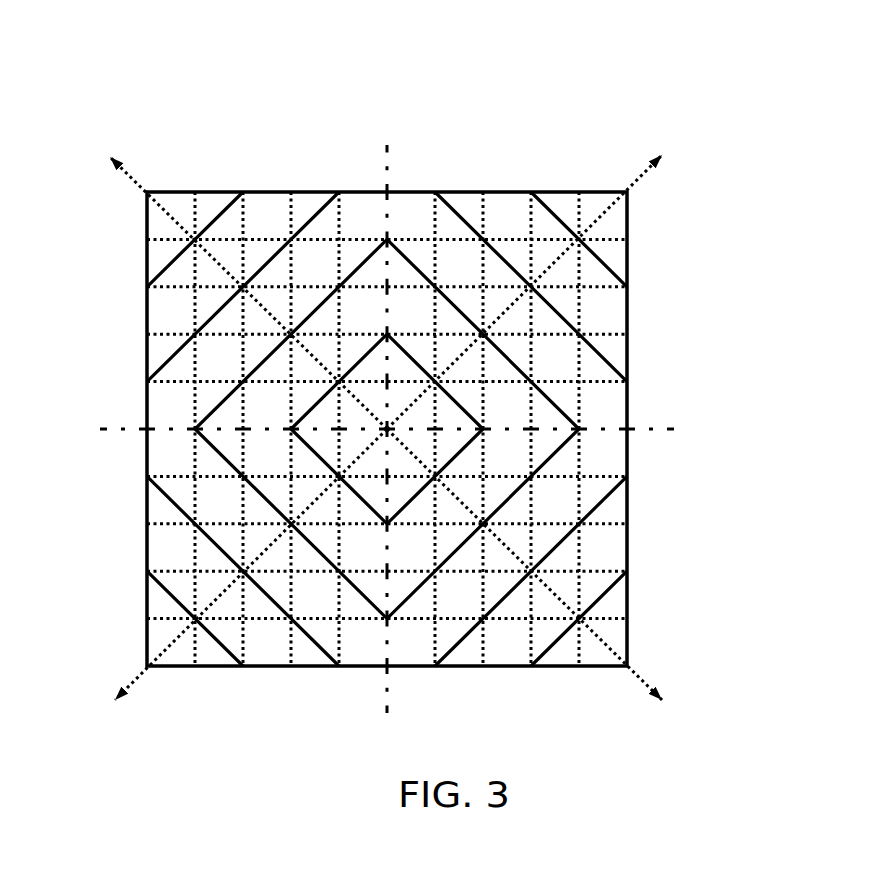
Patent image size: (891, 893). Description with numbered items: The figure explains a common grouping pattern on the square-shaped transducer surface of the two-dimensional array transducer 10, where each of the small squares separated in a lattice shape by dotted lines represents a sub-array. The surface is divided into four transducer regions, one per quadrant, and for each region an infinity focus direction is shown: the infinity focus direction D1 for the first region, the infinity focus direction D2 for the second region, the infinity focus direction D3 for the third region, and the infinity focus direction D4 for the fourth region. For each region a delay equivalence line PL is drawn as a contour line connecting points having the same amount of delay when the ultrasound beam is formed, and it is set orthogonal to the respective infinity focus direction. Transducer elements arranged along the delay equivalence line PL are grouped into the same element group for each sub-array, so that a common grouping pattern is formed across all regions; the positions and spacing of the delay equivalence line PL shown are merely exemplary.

The 2D array transducer 10 is at (482, 140).
The delay equivalence line PL is at (558, 403).
The infinity focus direction D1 is at (536, 282).
The infinity focus direction D2 is at (236, 278).
The infinity focus direction D3 is at (243, 577).
The infinity focus direction D4 is at (537, 577).